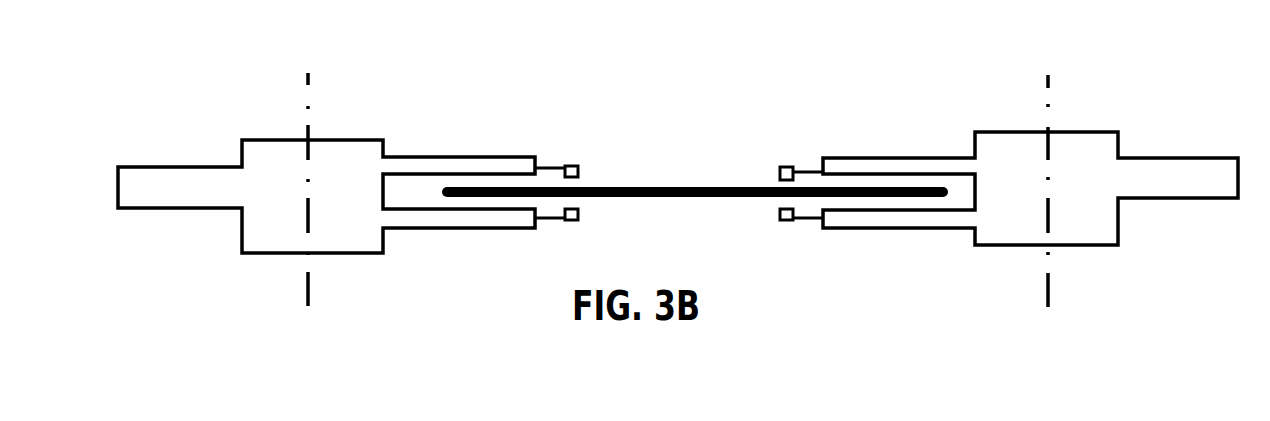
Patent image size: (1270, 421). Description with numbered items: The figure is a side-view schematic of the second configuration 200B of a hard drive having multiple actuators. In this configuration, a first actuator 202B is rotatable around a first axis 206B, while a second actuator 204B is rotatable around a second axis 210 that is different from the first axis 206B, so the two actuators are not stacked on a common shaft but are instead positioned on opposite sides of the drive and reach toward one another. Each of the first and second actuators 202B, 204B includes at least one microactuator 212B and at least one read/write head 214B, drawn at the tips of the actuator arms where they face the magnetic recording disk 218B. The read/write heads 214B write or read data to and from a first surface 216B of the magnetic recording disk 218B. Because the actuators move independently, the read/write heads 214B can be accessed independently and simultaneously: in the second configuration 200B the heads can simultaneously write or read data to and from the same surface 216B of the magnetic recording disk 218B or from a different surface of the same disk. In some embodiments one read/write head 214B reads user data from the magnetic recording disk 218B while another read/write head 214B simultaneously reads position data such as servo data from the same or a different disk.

The second configuration 200B is at (190, 30).
The first actuator 202B is at (180, 208).
The second actuator 204B is at (1197, 200).
The first axis 206B is at (306, 80).
The second axis 210 is at (1046, 80).
The microactuator 212B is at (546, 163).
The read/write head 214B is at (580, 166).
The first surface 216B is at (720, 198).
The magnetic recording disk 218B is at (641, 150).